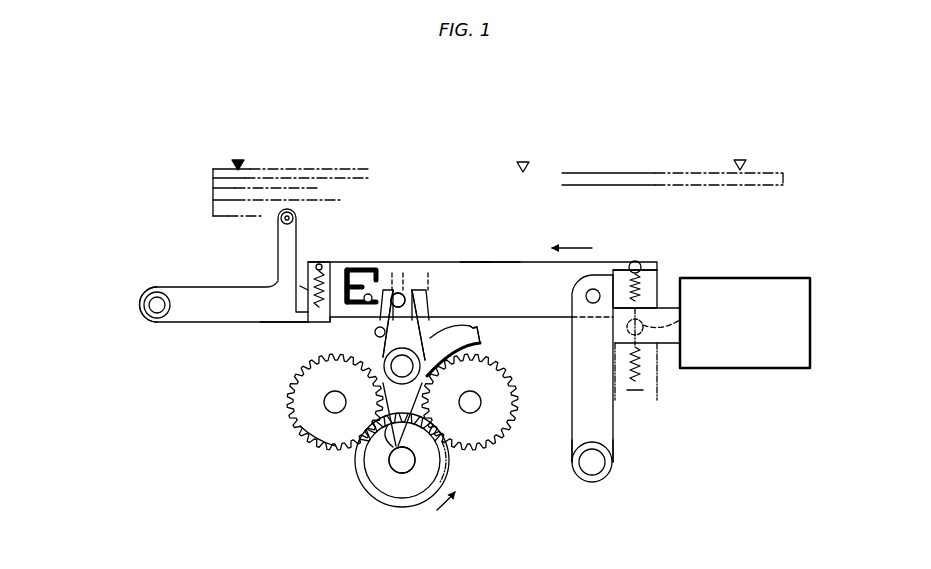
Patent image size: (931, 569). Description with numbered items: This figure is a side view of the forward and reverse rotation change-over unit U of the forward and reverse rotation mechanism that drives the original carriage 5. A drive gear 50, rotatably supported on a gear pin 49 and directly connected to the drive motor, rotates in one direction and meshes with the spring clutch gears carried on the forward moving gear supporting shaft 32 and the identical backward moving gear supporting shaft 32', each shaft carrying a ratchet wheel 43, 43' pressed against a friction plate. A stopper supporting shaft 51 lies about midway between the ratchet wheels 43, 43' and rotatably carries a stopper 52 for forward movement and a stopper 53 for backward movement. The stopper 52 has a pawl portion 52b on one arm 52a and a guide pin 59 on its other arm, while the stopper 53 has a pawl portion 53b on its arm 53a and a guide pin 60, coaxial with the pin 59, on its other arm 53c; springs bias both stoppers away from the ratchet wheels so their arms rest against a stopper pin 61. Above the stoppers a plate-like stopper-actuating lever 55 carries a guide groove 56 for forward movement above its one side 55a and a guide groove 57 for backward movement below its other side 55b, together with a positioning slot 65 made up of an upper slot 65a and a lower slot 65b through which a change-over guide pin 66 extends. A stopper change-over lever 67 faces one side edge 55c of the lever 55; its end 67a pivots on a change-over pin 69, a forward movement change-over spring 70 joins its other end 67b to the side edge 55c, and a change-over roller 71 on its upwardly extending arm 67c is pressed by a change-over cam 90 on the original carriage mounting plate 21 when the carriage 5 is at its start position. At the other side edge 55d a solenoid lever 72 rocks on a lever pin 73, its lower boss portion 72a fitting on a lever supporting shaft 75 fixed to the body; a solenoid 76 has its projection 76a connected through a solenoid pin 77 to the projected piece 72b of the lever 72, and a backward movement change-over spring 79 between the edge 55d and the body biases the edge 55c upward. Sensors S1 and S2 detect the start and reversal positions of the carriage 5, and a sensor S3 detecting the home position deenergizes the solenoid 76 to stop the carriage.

The original carriage 5 is at (647, 173).
The original carriage mounting plate 21 is at (213, 183).
The change-over cam 90 is at (213, 212).
The forward moving gear supporting shaft 32 is at (490, 402).
The backward moving gear supporting shaft 32' is at (312, 402).
The ratchet wheel 43 is at (447, 439).
The ratchet wheel (backward) 43' is at (290, 446).
The gear pin 49 is at (405, 465).
The drive gear 50 is at (367, 503).
The stopper supporting shaft 51 is at (423, 383).
The stopper for forward movement 52 is at (420, 328).
The arm of forward movement stopper 52a is at (462, 328).
The pawl portion of forward movement stopper 52b is at (476, 340).
The stopper for backward movement 53 is at (387, 420).
The arm of backward movement stopper 53a is at (414, 463).
The pawl portion of backward movement stopper 53b is at (376, 475).
The other arm of backward movement stopper 53c is at (412, 310).
The stopper-actuating lever 55 is at (530, 261).
The one side of stopper-actuating lever 55a is at (474, 261).
The other side of stopper-actuating lever 55b is at (487, 273).
The one side edge of stopper-actuating lever 55c is at (323, 261).
The other side edge of stopper-actuating lever 55d is at (616, 260).
The guide groove for forward movement 56 is at (420, 289).
The guide groove for backward movement 57 is at (428, 288).
The guide pin for forward movement 59 is at (428, 238).
The guide pin for backward movement 60 is at (404, 293).
The stopper pin 61 is at (375, 333).
The positioning slot 65 is at (391, 292).
The upper slot 65a is at (352, 287).
The lower slot 65b is at (341, 268).
The change-over guide pin 66 is at (400, 292).
The stopper change-over lever 67 is at (192, 298).
The one end of stopper change-over lever 67a is at (150, 287).
The other end of stopper change-over lever 67b is at (297, 323).
The upwardly extending arm 67c is at (275, 232).
The change-over pin 69 is at (159, 308).
The forward movement change-over spring 70 is at (306, 290).
The change-over roller 71 is at (293, 208).
The solenoid lever 72 is at (603, 425).
The boss portion 72a is at (606, 470).
The projected piece 72b is at (591, 282).
The lever pin 73 is at (620, 275).
The lever supporting shaft 75 is at (583, 482).
The solenoid 76 is at (762, 358).
The projection of solenoid 76a is at (675, 347).
The solenoid pin 77 is at (658, 401).
The backward movement change-over spring 79 is at (640, 290).
The sensor S1 is at (238, 158).
The sensor S2 is at (740, 158).
The sensor S3 is at (523, 160).
The forward and reverse rotation change-over unit U is at (445, 118).
The direction E is at (572, 236).